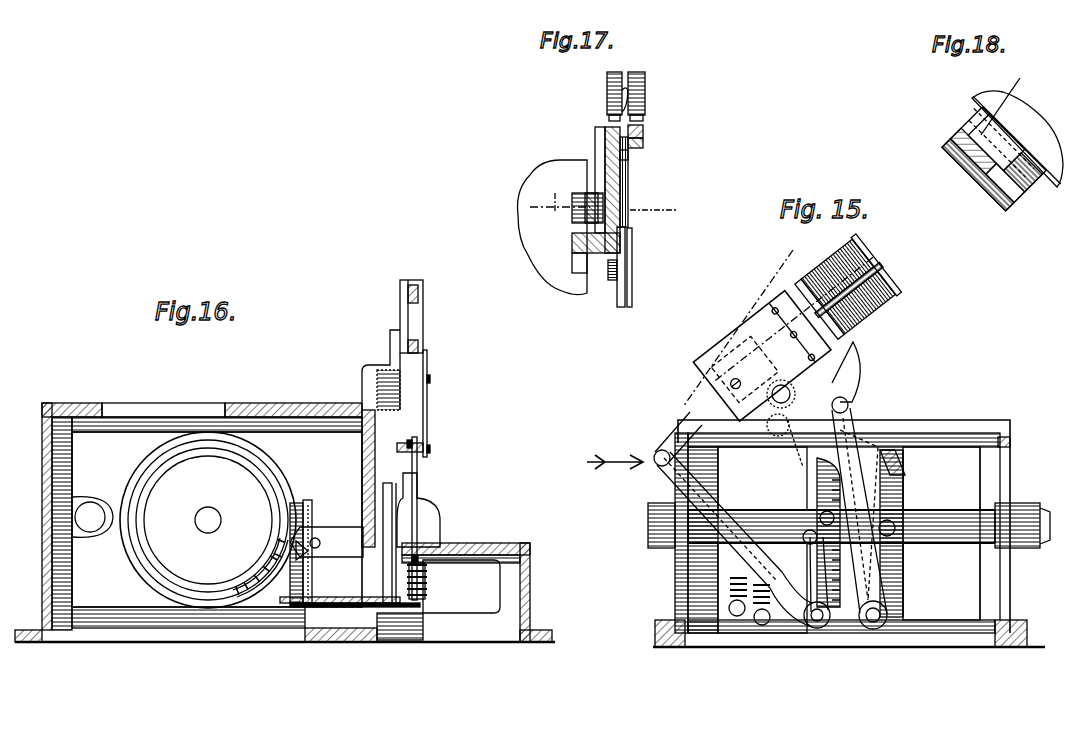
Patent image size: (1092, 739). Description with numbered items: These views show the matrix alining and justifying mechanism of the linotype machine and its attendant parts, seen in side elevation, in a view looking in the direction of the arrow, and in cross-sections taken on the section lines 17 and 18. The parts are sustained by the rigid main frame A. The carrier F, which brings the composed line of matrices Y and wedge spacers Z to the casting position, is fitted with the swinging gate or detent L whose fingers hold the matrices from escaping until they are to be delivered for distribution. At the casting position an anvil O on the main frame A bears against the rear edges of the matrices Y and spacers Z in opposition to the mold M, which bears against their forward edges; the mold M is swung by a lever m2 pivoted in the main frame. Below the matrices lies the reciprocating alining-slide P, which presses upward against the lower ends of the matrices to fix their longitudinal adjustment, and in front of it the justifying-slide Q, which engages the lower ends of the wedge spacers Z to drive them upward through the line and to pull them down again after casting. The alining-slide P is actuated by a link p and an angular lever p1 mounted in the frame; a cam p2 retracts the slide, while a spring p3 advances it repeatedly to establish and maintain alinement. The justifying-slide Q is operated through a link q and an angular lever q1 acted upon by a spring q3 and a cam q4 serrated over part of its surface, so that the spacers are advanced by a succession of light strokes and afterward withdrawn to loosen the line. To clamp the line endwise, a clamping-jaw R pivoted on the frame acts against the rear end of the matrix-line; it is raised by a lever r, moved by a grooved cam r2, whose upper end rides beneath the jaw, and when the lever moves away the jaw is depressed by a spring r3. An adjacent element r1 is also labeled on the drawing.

In FIG. 16, the main frame A is at (285, 486).
In FIG. 17, the main frame A is at (554, 227).
In FIG. 18, the main frame A is at (1050, 138).
In FIG. 15, the main frame A is at (957, 418).
In FIG. 17, the carrier F is at (638, 93).
In FIG. 15, the carrier F is at (840, 258).
In FIG. 15, the carrier-gate L is at (875, 265).
In FIG. 17, the anvil O is at (610, 128).
In FIG. 18, the anvil O is at (1007, 100).
In FIG. 16, the alining-slide P is at (417, 333).
In FIG. 17, the alining-slide P is at (625, 258).
In FIG. 18, the alining-slide P is at (953, 130).
In FIG. 15, the alining-slide P is at (733, 340).
In FIG. 16, the justifying-slide Q is at (415, 373).
In FIG. 17, the justifying-slide Q is at (631, 212).
In FIG. 18, the justifying-slide Q is at (982, 172).
In FIG. 15, the justifying-slide Q is at (799, 326).
In FIG. 17, the clamping-jaw R is at (600, 150).
In FIG. 18, the clamping-jaw R is at (1030, 193).
In FIG. 15, the clamping-jaw R is at (856, 372).
In FIG. 17, the matrices Y is at (643, 125).
In FIG. 17, the mold M is at (652, 142).
In FIG. 17, the spacers Z is at (633, 148).
In FIG. 16, the link p is at (414, 433).
In FIG. 17, the link p is at (613, 283).
In FIG. 16, the angular lever p1 is at (301, 520).
In FIG. 15, the angular lever p1 is at (712, 505).
In FIG. 16, the cam p2 is at (270, 548).
In FIG. 15, the cam p2 is at (825, 485).
In FIG. 16, the spring p3 is at (430, 587).
In FIG. 15, the spring p3 is at (730, 595).
In FIG. 16, the link q is at (428, 425).
In FIG. 17, the link q is at (633, 292).
In FIG. 15, the link q is at (693, 420).
In FIG. 16, the angular lever q1 is at (428, 465).
In FIG. 15, the angular lever q1 is at (705, 537).
In FIG. 15, the spring q3 is at (768, 585).
In FIG. 16, the cam q4 is at (205, 590).
In FIG. 15, the cam q4 is at (873, 488).
In FIG. 15, the lever r is at (852, 418).
In FIG. 15, the bar r1 is at (890, 556).
In FIG. 15, the grooved cam r2 is at (888, 514).
In FIG. 17, the spring r3 is at (592, 226).
In FIG. 15, the spring r3 is at (790, 376).
In FIG. 16, the lever m2 is at (310, 563).
In FIG. 15, the section line 17 is at (739, 326).
In FIG. 17, the section line 18 is at (624, 200).